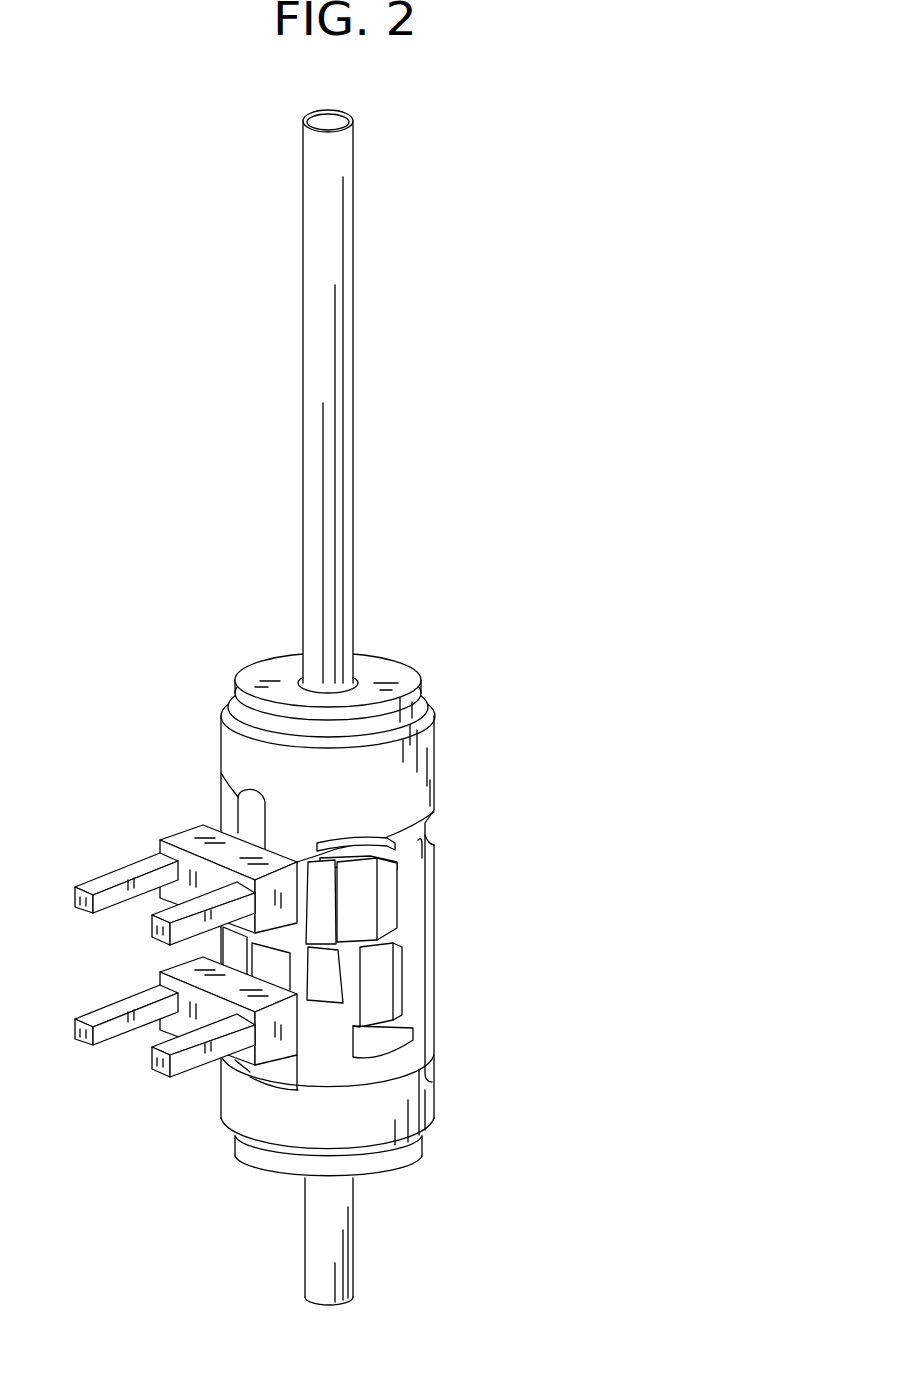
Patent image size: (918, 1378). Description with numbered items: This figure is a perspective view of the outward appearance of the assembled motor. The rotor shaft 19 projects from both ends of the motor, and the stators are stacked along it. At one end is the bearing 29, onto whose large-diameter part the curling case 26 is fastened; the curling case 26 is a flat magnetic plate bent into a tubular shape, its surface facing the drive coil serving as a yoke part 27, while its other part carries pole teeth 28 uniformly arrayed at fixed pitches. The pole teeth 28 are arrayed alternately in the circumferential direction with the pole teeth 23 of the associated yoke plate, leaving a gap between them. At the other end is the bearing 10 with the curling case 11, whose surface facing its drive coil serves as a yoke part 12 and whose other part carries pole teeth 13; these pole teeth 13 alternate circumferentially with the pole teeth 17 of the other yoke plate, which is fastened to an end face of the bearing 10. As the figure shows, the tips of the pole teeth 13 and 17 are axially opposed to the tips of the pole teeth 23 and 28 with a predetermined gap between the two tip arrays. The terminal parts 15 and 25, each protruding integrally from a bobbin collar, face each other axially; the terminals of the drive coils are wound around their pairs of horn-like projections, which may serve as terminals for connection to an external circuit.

The bearing 10 is at (375, 1167).
The curling case 11 is at (472, 1110).
The yoke part 12 is at (433, 1125).
The pole teeth 13 is at (423, 957).
The terminal part 15 is at (195, 975).
The pole teeth 17 is at (385, 1001).
The rotor shaft 19 is at (332, 395).
The pole teeth 23 is at (358, 913).
The terminal part 25 is at (195, 845).
The curling case 26 is at (478, 784).
The yoke part 27 is at (417, 758).
The pole teeth 28 is at (408, 873).
The bearing 29 is at (383, 673).